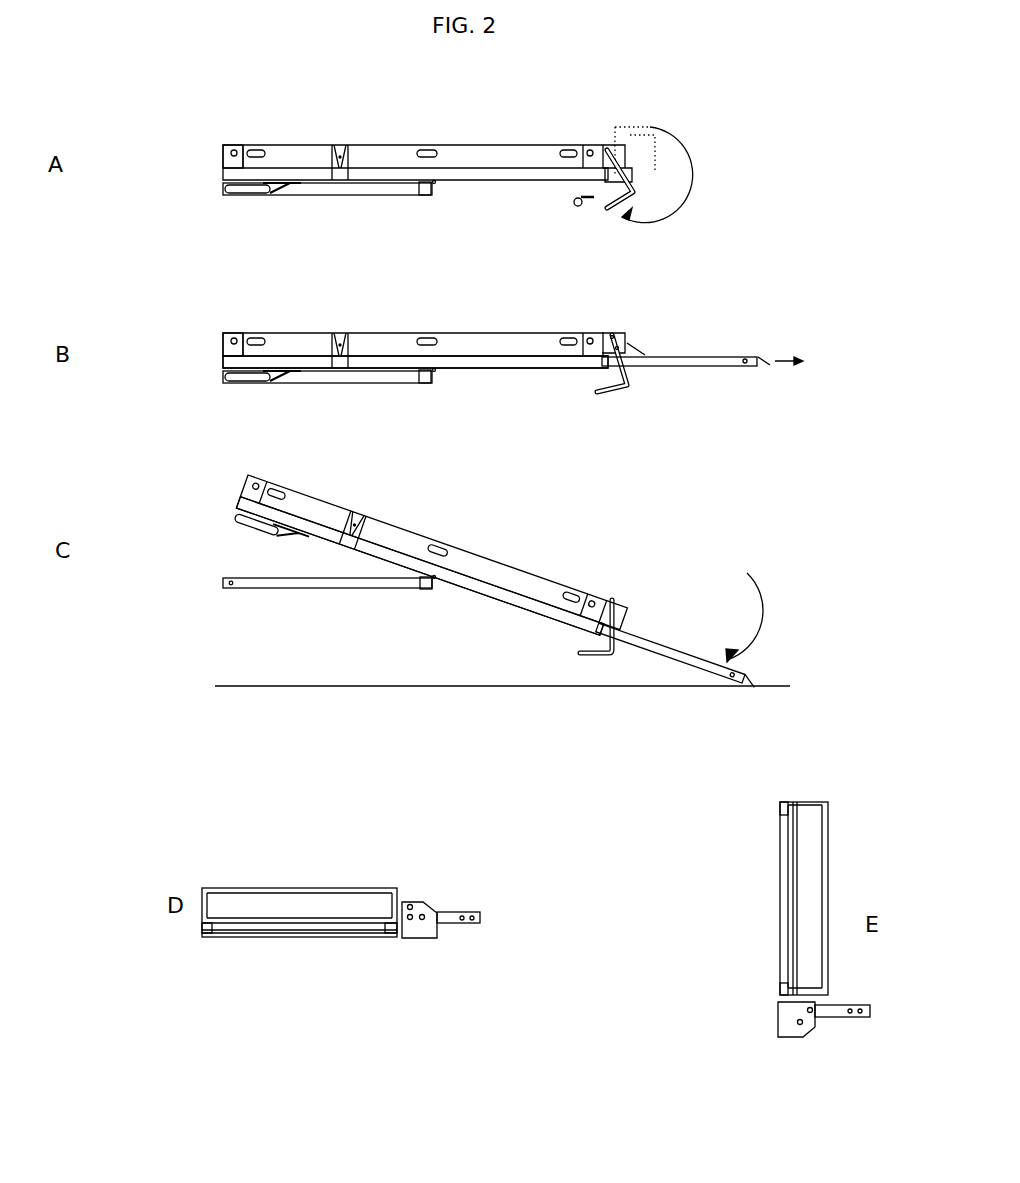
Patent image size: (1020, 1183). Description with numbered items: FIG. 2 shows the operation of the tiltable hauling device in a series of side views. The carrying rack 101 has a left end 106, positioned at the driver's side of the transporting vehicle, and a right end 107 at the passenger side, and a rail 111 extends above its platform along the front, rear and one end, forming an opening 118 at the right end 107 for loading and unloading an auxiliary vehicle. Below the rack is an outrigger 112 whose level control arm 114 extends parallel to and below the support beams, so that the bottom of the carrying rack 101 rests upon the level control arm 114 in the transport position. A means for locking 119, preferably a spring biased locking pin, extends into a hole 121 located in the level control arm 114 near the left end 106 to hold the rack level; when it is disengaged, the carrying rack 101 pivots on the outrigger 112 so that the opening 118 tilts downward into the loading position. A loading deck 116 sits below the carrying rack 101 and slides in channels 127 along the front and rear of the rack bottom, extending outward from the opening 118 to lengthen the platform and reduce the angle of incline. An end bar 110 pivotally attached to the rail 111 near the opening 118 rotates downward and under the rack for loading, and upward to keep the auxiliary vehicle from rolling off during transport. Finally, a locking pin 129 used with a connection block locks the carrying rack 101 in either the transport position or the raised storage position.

The carrying rack 101 is at (286, 131).
The left end 106 is at (223, 152).
The right end 107 is at (627, 152).
The end bar 110 is at (612, 210).
The outrigger 112 is at (577, 207).
The level control arm 114 is at (302, 196).
The rail 111 is at (365, 332).
The channels 127 is at (528, 362).
The loading deck 116 is at (760, 355).
The opening 118 is at (628, 620).
The means for locking 119 is at (235, 513).
The hole 121 is at (230, 585).
The locking pin 129 is at (422, 924).